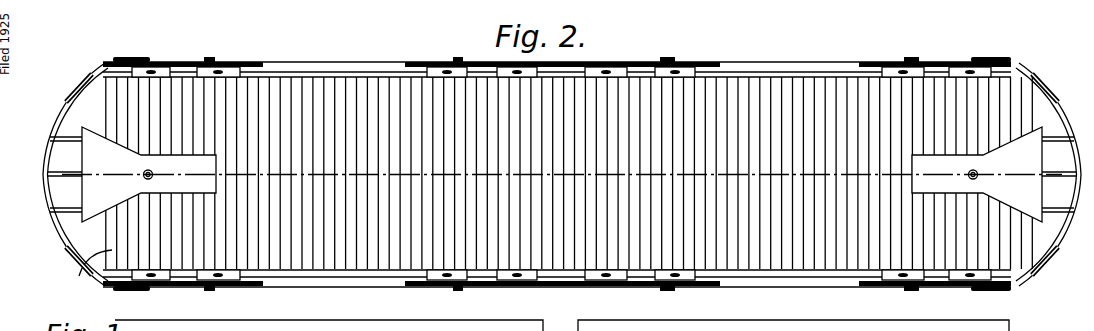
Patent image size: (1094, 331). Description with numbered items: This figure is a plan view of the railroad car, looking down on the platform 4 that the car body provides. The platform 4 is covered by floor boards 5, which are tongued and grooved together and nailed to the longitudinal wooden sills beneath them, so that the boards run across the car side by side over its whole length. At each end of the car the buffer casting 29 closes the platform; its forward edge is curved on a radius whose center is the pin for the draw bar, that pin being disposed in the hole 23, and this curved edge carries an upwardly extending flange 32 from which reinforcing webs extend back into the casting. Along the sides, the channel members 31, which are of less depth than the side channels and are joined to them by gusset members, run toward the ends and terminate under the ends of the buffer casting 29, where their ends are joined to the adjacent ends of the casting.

The platform 4 is at (81, 272).
The floor boards 5 is at (340, 79).
The hole 23 is at (146, 178).
The buffer casting 29 is at (54, 198).
The channel members 31 is at (80, 78).
The flange 32 is at (47, 147).